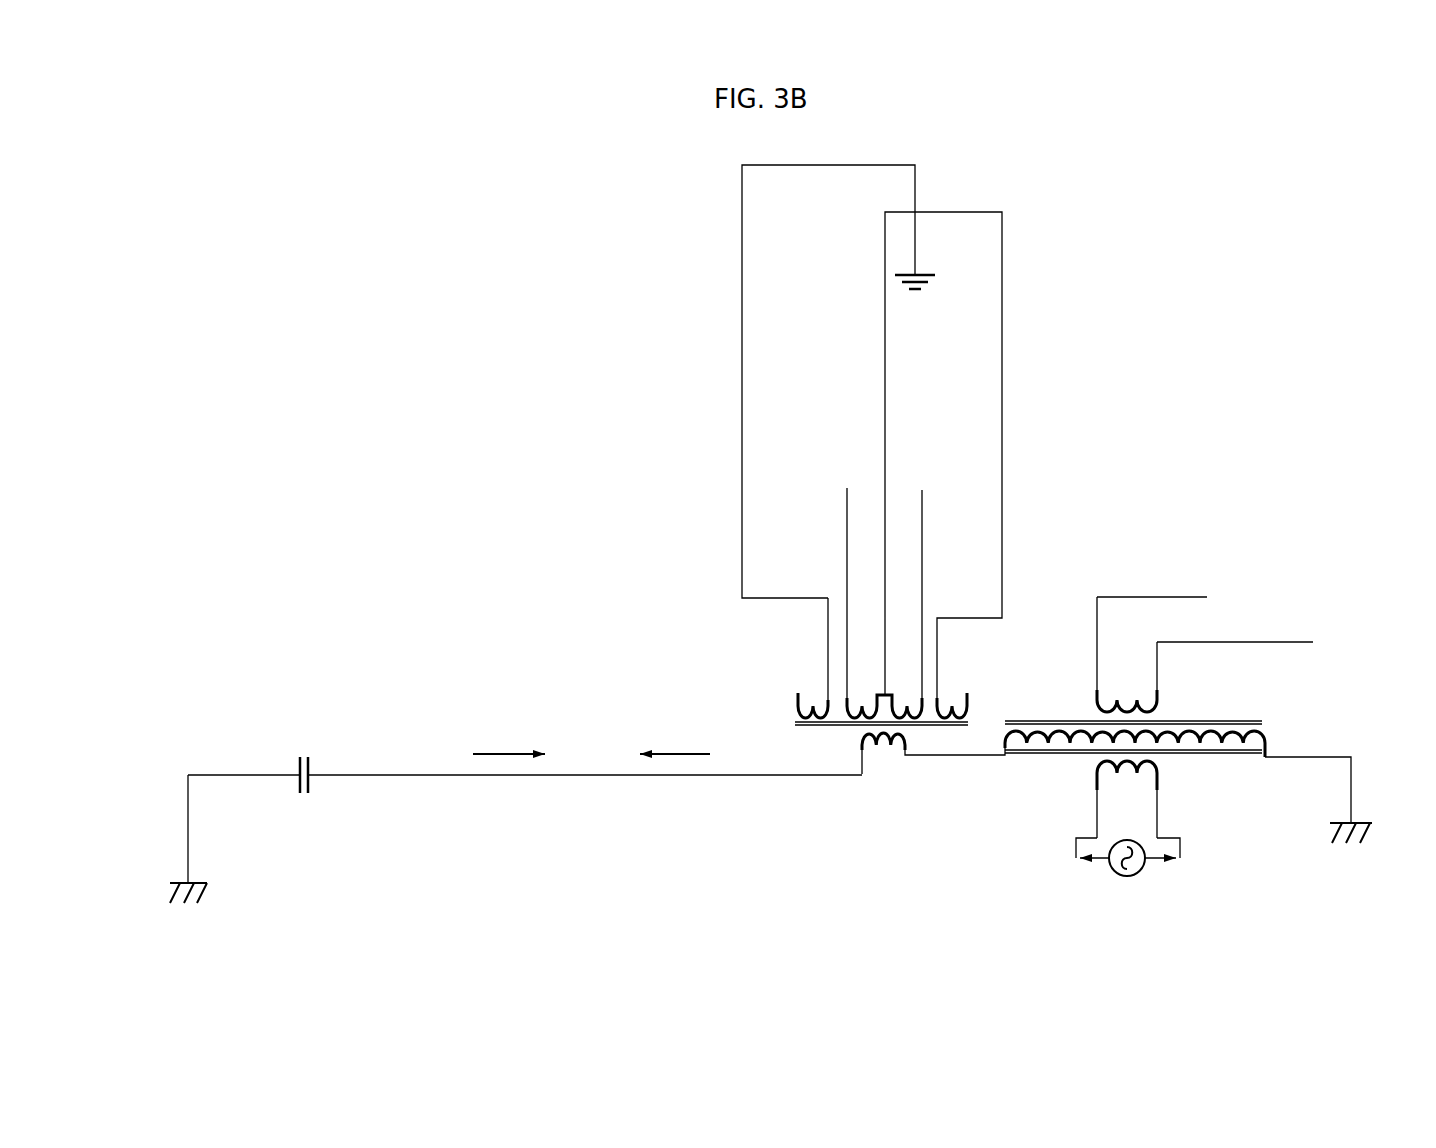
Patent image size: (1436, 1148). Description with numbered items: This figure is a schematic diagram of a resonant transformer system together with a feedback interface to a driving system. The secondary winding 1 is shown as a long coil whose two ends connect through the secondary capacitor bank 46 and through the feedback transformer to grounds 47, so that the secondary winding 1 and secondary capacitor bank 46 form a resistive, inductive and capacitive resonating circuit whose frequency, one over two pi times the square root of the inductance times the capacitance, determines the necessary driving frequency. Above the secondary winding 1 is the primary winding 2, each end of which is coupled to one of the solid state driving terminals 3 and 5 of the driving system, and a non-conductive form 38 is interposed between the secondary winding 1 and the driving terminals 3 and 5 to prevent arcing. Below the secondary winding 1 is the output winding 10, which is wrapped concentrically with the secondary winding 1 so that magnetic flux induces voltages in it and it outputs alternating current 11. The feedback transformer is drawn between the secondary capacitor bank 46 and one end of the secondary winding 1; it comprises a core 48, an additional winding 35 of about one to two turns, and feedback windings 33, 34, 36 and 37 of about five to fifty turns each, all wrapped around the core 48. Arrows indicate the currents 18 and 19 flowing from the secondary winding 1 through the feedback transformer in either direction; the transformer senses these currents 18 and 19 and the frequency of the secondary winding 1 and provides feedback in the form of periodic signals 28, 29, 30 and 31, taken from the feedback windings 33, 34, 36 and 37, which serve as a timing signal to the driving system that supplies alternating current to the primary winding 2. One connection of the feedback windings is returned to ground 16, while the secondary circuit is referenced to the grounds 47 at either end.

The secondary winding 1 is at (1270, 733).
The primary winding 2 is at (1158, 698).
The solid state driving terminal 3 is at (1288, 639).
The solid state driving terminal 5 is at (1204, 596).
The output winding 10 is at (1160, 776).
The alternating current 11 is at (1128, 873).
The ground 16 is at (855, 381).
The current 18 is at (509, 740).
The current 19 is at (675, 740).
The periodic signal 28 is at (967, 693).
The periodic signal 29 is at (836, 585).
The periodic signal 30 is at (798, 693).
The periodic signal 31 is at (943, 456).
The feedback winding 33 is at (815, 722).
The feedback winding 34 is at (855, 720).
The additional winding 35 is at (873, 746).
The feedback winding 36 is at (920, 722).
The feedback winding 37 is at (972, 722).
The non-conductive form 38 is at (1215, 722).
The secondary capacitor bank 46 is at (250, 761).
The ground 47 is at (786, 830).
The core 48 is at (792, 721).